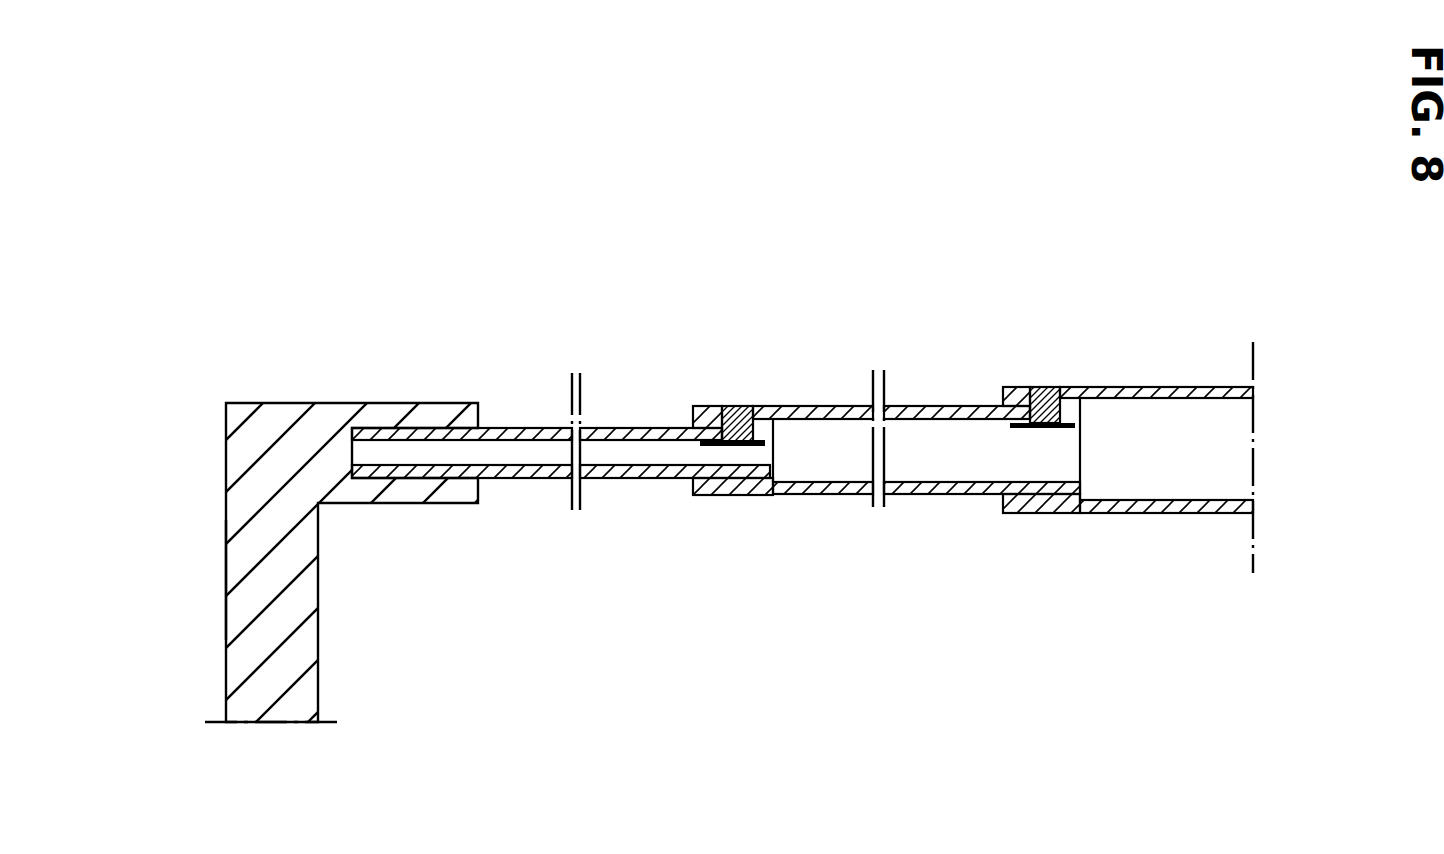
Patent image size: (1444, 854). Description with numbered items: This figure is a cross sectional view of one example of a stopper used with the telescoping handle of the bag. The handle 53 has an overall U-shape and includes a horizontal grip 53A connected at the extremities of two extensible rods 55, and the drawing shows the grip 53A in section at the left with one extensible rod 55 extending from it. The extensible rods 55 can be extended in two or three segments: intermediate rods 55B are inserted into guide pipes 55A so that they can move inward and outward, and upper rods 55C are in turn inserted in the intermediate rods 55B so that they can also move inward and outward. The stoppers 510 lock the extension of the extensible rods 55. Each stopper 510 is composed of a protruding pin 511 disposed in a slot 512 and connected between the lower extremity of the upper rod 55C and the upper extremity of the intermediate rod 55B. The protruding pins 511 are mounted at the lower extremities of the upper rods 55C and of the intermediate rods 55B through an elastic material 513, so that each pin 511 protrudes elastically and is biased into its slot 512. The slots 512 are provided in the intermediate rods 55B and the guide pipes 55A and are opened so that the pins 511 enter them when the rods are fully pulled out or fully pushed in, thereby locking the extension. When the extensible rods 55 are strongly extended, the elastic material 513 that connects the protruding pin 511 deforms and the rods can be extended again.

The handle 53 is at (198, 437).
The horizontal grip 53A is at (237, 572).
The extensible rods 55 is at (802, 372).
The guide pipes 55A is at (1148, 390).
The intermediate rods 55B is at (835, 406).
The upper rods 55C is at (510, 432).
The stoppers 510 is at (780, 440).
The protruding pin 511 is at (736, 406).
The slot 512 is at (718, 402).
The elastic material 513 is at (715, 440).